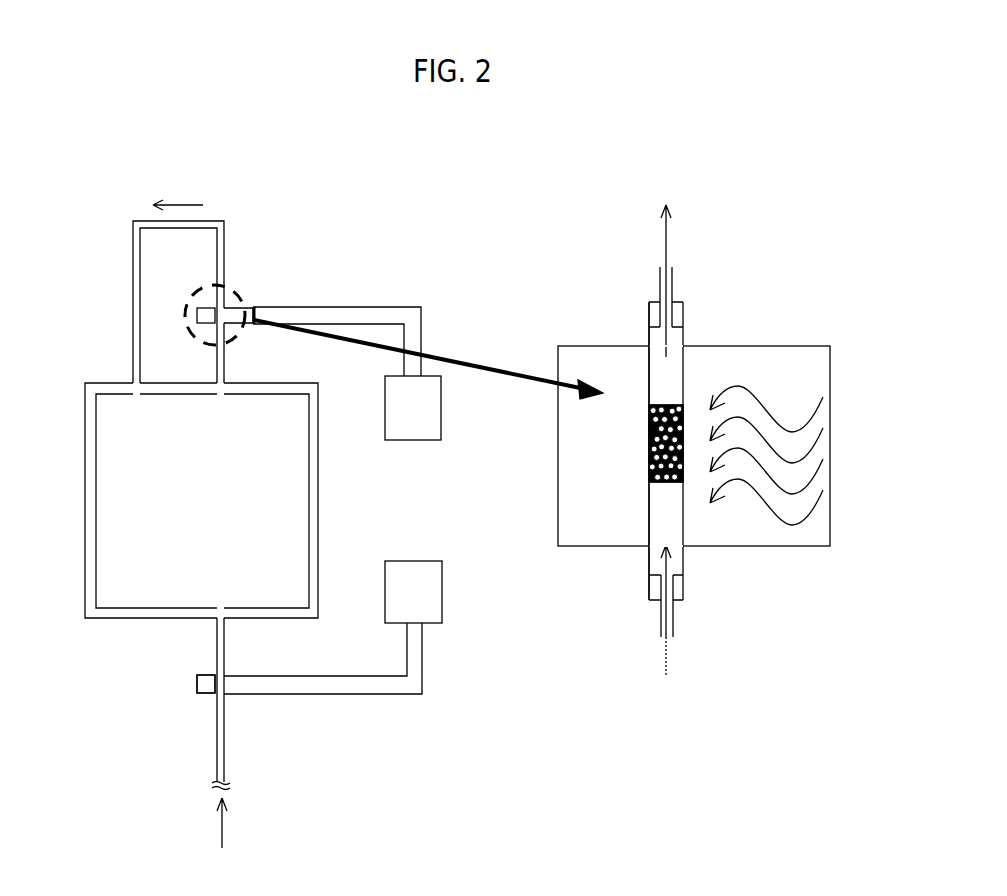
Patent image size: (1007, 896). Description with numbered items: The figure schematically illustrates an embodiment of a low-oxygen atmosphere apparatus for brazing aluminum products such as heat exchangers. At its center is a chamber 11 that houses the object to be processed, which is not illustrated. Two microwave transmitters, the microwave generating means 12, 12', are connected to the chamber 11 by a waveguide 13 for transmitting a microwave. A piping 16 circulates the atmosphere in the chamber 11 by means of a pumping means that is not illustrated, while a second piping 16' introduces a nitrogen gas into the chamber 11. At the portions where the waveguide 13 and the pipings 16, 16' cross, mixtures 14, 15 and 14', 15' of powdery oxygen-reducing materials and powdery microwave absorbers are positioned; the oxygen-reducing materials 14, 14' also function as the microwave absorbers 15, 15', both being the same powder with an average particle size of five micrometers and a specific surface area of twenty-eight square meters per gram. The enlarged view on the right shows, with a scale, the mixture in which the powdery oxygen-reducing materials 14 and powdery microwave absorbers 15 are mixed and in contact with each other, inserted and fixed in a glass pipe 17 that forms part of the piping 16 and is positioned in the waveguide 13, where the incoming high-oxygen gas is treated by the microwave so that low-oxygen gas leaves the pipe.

The chamber 11 is at (112, 612).
The microwave generating means 12 is at (451, 408).
The microwave generating means 12' is at (454, 592).
The waveguide 13 is at (360, 315).
The powdery oxygen-reducing material 14 is at (434, 417).
The powdery microwave absorber 15 is at (595, 548).
The piping 16 is at (428, 447).
The piping 16' is at (161, 733).
The glass pipe 17 is at (647, 562).
The powdery oxygen-reducing material 14' is at (267, 748).
The powdery microwave absorber 15' is at (206, 684).